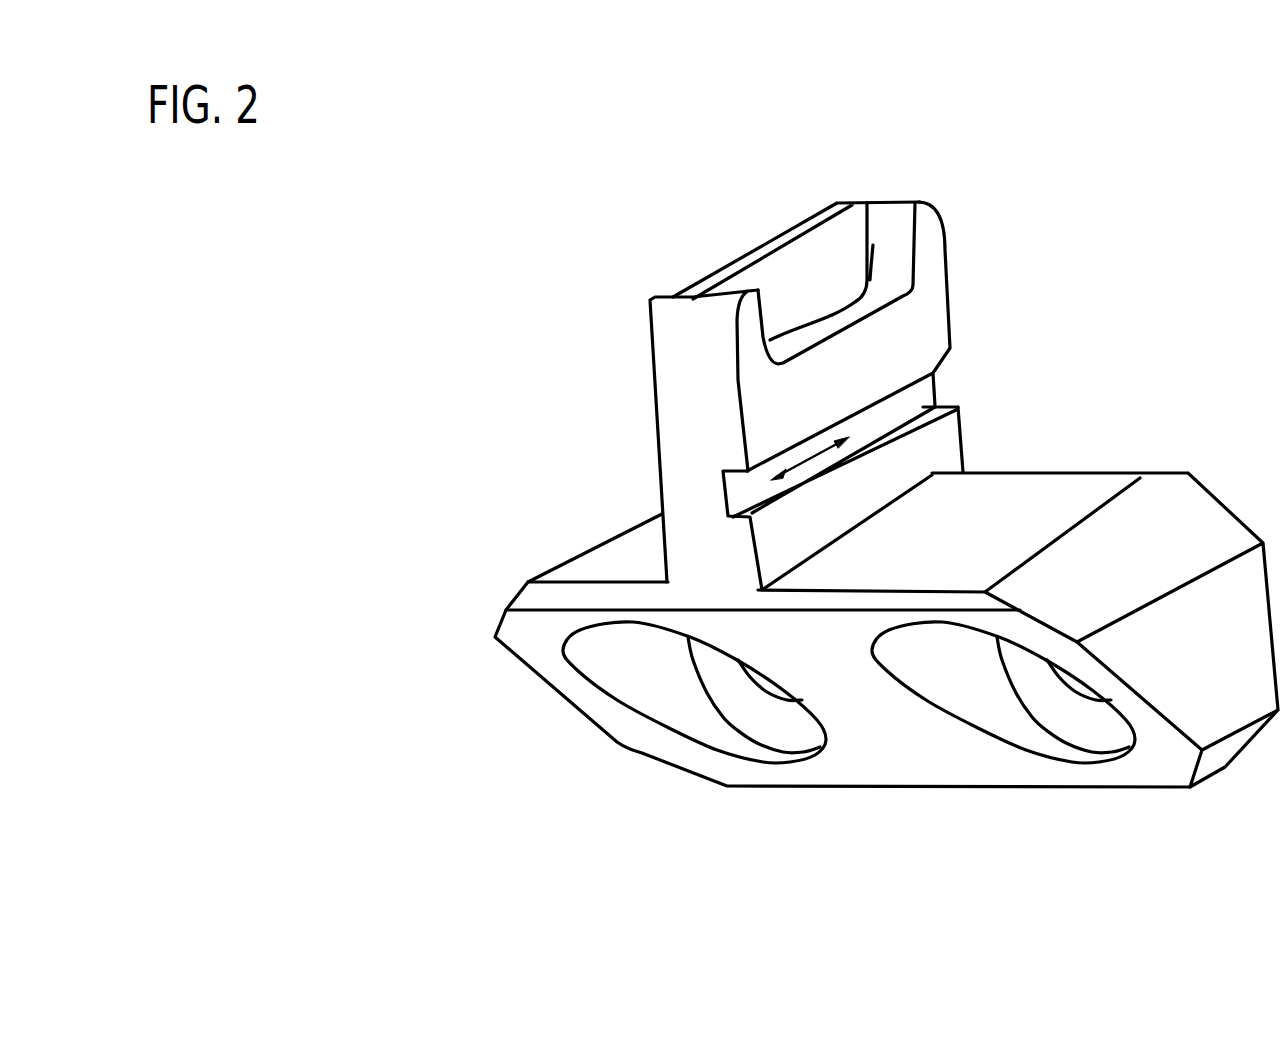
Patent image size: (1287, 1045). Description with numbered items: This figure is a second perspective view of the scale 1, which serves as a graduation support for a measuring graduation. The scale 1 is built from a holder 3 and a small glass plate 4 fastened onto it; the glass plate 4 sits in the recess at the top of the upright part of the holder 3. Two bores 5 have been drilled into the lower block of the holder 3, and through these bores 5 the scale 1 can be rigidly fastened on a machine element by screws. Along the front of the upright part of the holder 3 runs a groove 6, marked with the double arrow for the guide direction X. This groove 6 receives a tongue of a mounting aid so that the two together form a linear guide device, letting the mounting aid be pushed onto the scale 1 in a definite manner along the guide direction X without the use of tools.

The scale 1 is at (1008, 284).
The holder 3 is at (935, 258).
The small glass plate 4 is at (780, 283).
The bores 5 is at (735, 705).
The groove 6 is at (950, 380).